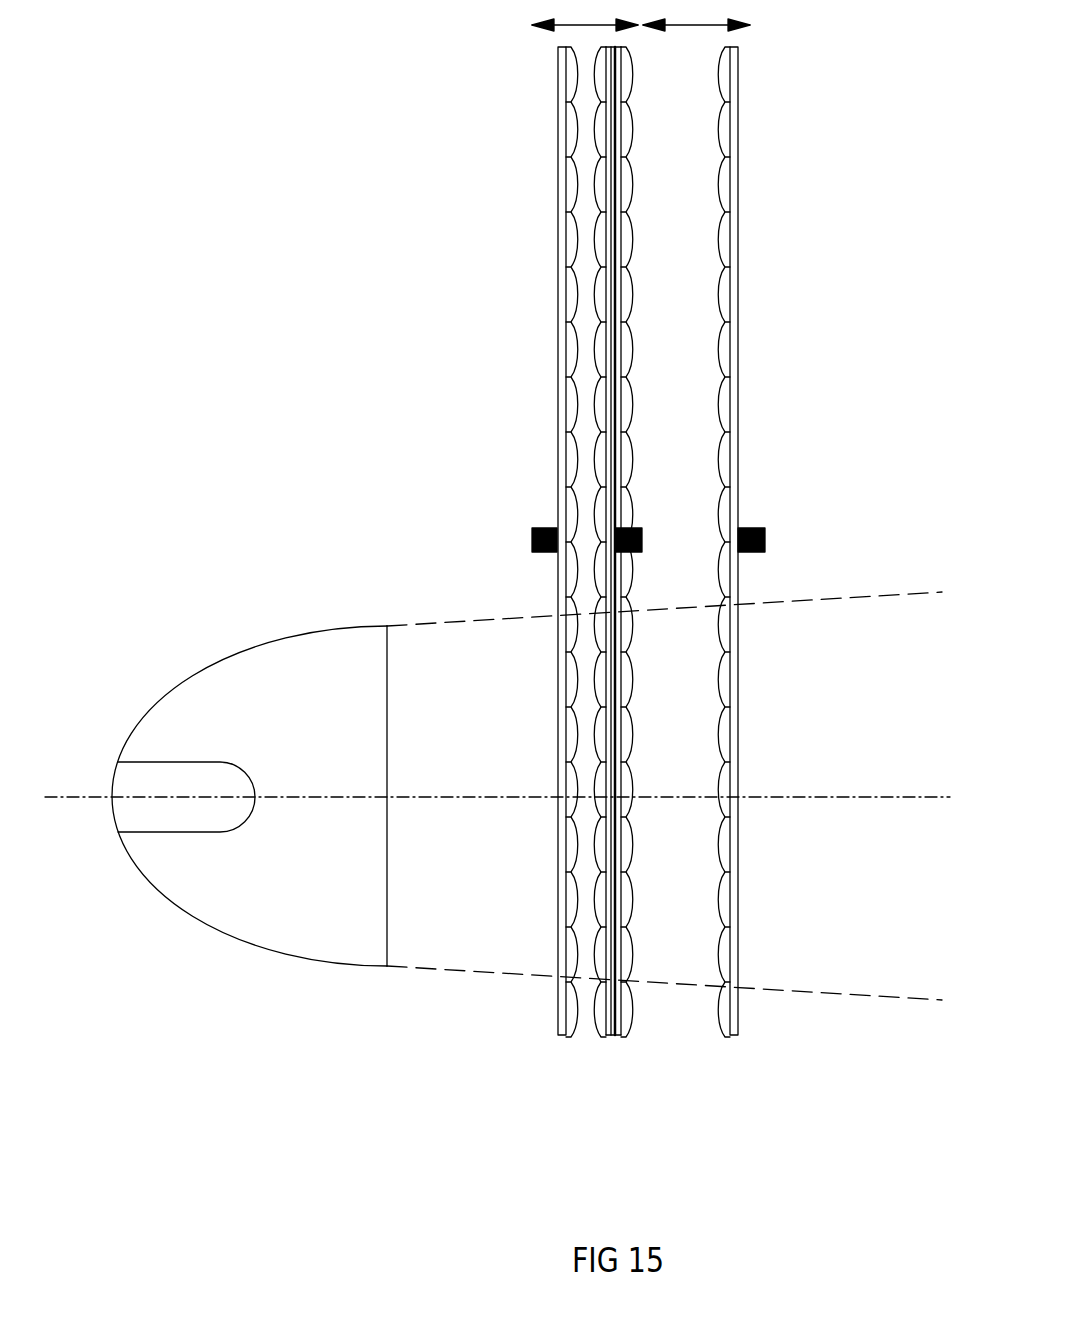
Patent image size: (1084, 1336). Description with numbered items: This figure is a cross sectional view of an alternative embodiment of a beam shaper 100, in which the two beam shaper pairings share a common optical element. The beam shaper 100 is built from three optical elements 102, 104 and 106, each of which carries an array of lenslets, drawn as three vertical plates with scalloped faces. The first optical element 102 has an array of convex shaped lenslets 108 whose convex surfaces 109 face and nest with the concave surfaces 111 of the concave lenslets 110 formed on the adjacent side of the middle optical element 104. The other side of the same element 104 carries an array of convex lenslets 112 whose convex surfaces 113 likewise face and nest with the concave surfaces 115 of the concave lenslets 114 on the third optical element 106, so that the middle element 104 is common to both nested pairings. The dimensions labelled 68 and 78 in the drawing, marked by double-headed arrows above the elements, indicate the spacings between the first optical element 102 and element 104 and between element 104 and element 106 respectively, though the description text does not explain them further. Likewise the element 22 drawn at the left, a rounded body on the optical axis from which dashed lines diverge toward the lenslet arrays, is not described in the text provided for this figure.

The nose cone 22 is at (167, 817).
The spacing dimension 68 is at (585, 15).
The spacing dimension 78 is at (696, 15).
The beam shaper 100 is at (650, 610).
The first optical element 102 is at (519, 588).
The optical element 104 is at (649, 590).
The optical element 106 is at (775, 600).
The convex shaped lenslets 108 is at (568, 907).
The convex surfaces 109 is at (570, 882).
The concave lenslets 110 is at (607, 917).
The concave surfaces 111 is at (607, 882).
The convex lenslets 112 is at (627, 828).
The convex surfaces 113 is at (627, 855).
The concave lenslets 114 is at (733, 862).
The concave surfaces 115 is at (733, 827).